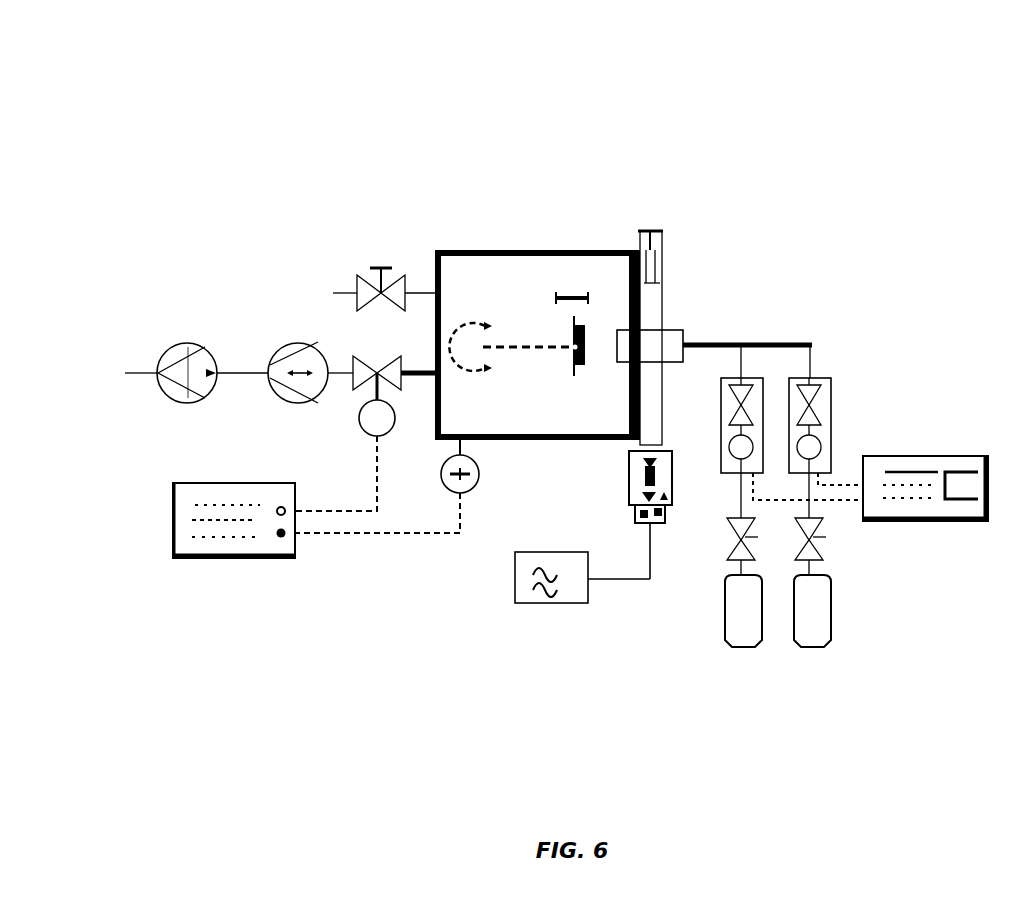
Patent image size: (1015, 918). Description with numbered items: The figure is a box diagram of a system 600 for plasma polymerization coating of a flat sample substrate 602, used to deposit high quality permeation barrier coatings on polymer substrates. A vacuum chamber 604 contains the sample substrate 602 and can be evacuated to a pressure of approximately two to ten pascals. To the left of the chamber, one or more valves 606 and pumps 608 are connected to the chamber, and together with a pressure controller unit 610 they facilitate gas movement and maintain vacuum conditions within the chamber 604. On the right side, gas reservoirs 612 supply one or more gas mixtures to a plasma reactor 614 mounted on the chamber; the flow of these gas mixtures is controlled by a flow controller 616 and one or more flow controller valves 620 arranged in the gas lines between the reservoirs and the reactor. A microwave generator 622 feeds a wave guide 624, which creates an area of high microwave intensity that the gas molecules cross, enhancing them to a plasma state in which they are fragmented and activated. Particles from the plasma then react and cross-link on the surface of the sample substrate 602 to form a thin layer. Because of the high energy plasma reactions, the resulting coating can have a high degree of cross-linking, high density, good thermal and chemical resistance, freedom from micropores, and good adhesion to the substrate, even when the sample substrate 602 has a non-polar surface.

The system 600 is at (118, 88).
The sample substrate 602 is at (586, 321).
The vacuum chamber 604 is at (494, 272).
The valves 606 is at (366, 274).
The pumps 608 is at (284, 344).
The pressure controller unit 610 is at (201, 554).
The gas reservoirs 612 is at (750, 622).
The plasma reactor 614 is at (672, 335).
The flow controller 616 is at (933, 461).
The flow controller valves 620 is at (756, 390).
The microwave generator 622 is at (522, 602).
The wave guide 624 is at (664, 522).